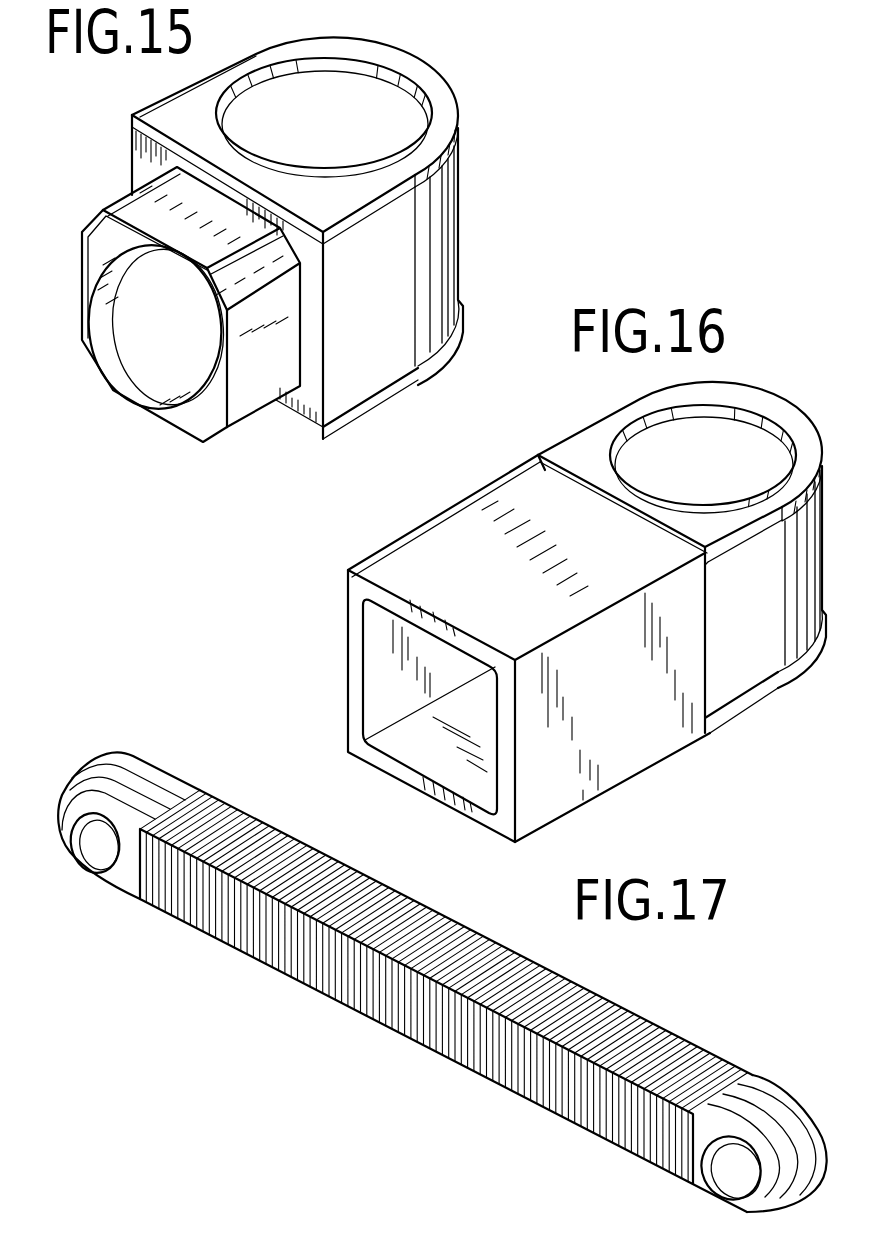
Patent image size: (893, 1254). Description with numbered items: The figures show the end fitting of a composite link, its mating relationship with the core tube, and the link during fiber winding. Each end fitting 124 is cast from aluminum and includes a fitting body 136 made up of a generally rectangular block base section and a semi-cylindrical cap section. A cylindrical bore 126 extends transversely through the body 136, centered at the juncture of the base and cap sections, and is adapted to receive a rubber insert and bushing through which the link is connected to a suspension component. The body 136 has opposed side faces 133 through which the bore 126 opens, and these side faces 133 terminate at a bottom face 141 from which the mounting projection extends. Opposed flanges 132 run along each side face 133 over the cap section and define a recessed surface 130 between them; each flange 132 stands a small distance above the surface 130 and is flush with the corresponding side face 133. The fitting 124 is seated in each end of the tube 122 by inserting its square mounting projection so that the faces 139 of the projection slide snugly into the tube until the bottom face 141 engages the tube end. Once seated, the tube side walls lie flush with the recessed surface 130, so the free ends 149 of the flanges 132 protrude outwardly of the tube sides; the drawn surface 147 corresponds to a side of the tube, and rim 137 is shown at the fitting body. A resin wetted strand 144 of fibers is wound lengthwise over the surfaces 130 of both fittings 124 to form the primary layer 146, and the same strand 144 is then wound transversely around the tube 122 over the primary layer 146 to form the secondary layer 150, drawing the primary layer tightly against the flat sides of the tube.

In FIG. 16, the tube 122 is at (465, 530).
In FIG. 15, the end fitting 124 is at (168, 118).
In FIG. 16, the end fitting 124 is at (765, 670).
In FIG. 15, the cylindrical bore 126 is at (393, 107).
In FIG. 15, the recessed surface 130 is at (383, 332).
In FIG. 16, the recessed surface 130 is at (753, 629).
In FIG. 15, the flange 132 is at (368, 218).
In FIG. 16, the flange 132 is at (737, 545).
In FIG. 15, the side face 133 is at (213, 80).
In FIG. 15, the fitting body 136 is at (407, 262).
In FIG. 15, the rim 137 is at (437, 90).
In FIG. 15, the face of the projection 139 is at (207, 231).
In FIG. 15, the bottom face 141 is at (232, 190).
In FIG. 17, the resin wetted strand of fibers 144 is at (150, 790).
In FIG. 17, the primary layer of fibers 146 is at (163, 800).
In FIG. 16, the side face of tube 147 is at (622, 701).
In FIG. 15, the free end of the flange 149 is at (133, 128).
In FIG. 16, the free end of the flange 149 is at (538, 455).
In FIG. 17, the secondary layer 150 is at (214, 812).